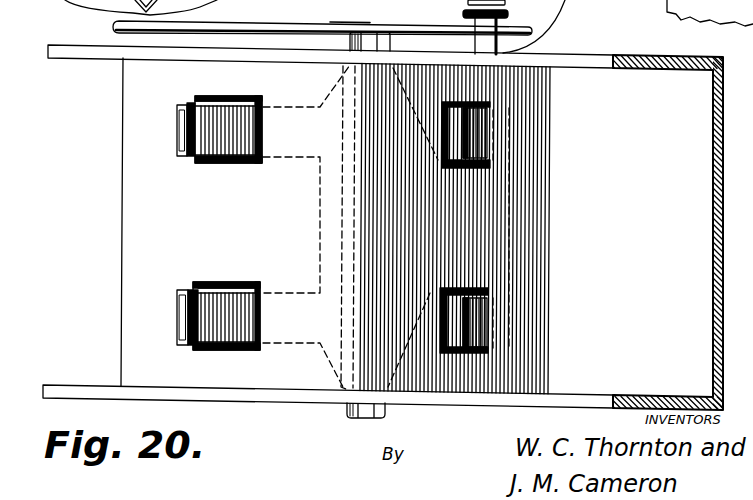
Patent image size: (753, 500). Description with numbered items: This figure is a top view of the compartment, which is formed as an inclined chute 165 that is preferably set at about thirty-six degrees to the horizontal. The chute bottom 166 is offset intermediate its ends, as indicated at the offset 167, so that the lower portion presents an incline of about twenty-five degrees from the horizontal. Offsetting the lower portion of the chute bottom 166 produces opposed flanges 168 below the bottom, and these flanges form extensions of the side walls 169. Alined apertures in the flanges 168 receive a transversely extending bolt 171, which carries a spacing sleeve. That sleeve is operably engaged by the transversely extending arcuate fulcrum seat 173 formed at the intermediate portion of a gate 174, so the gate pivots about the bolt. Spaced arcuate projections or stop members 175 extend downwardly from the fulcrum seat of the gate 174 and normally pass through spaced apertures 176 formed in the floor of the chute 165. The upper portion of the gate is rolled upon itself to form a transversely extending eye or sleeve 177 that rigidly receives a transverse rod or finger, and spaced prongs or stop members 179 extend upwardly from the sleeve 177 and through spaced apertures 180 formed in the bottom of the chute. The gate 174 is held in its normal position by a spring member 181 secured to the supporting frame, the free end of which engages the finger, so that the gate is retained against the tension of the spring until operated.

The inclined chute 165 is at (638, 28).
The chute bottom 166 is at (137, 176).
The offset 167 is at (437, 373).
The opposed flanges 168 is at (322, 17).
The side walls 169 is at (305, 58).
The transversely extending bolt 171 is at (367, 419).
The arcuate fulcrum seat 173 is at (343, 312).
The gate 174 is at (320, 208).
The arcuate stop members 175 is at (182, 128).
The spaced apertures 176 is at (194, 96).
The eye or sleeve 177 is at (503, 238).
The prongs or stop members 179 is at (480, 140).
The spaced apertures 180 is at (490, 105).
The spring member 181 is at (347, 25).